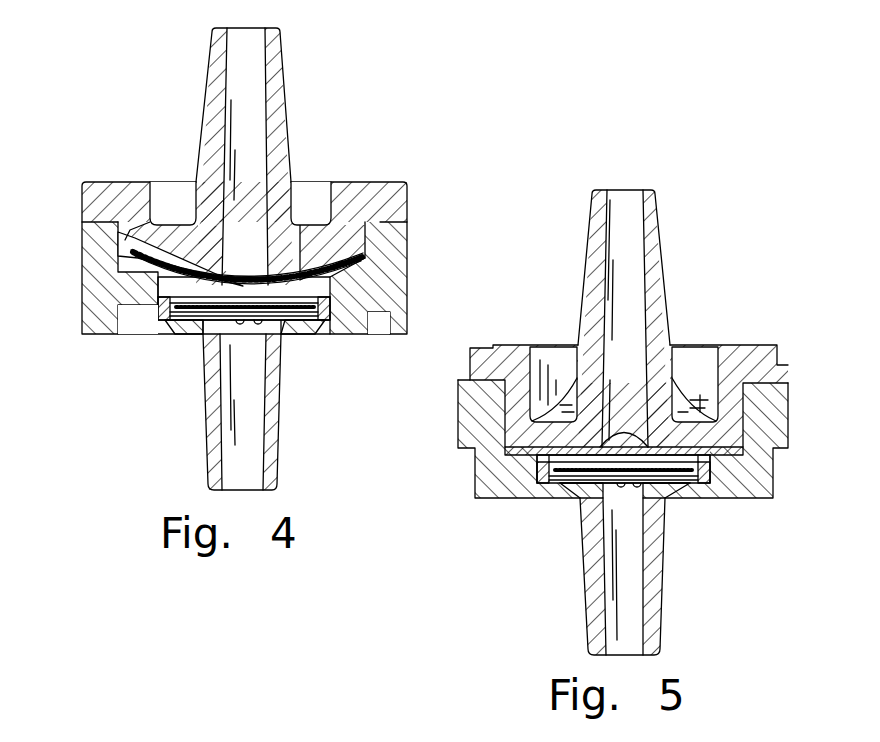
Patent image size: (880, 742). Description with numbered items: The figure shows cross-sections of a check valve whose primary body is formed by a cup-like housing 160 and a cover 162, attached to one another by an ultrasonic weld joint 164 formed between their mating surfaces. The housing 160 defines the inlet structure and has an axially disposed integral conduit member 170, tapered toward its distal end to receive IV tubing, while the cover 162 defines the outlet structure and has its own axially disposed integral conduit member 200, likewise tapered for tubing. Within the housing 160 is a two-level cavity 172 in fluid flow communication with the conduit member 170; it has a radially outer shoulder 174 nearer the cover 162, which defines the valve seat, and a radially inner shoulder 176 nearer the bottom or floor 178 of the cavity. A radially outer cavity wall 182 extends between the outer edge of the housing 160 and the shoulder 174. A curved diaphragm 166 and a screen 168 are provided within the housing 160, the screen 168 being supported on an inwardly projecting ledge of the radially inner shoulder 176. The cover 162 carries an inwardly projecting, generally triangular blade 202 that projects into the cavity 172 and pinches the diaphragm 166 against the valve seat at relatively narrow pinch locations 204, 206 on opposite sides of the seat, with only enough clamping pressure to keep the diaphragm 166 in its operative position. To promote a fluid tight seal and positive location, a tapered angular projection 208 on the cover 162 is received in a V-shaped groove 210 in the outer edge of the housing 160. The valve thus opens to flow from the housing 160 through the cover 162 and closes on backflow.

In FIG. 4, the housing 160 is at (95, 244).
In FIG. 5, the housing 160 is at (790, 386).
In FIG. 4, the cover 162 is at (88, 205).
In FIG. 4, the ultrasonic weld joint 164 is at (400, 220).
In FIG. 4, the diaphragm 166 is at (145, 262).
In FIG. 5, the diaphragm 166 is at (535, 468).
In FIG. 4, the screen 168 is at (185, 328).
In FIG. 5, the screen 168 is at (560, 496).
In FIG. 4, the conduit member 170 is at (272, 447).
In FIG. 5, the conduit member 170 is at (660, 603).
In FIG. 4, the cavity 172 is at (160, 245).
In FIG. 5, the cavity 172 is at (770, 500).
In FIG. 4, the radially outer shoulder 174 is at (165, 298).
In FIG. 5, the radially outer shoulder 174 is at (745, 462).
In FIG. 4, the radially inner shoulder 176 is at (158, 325).
In FIG. 5, the radially inner shoulder 176 is at (715, 500).
In FIG. 4, the bottom or floor 178 is at (202, 322).
In FIG. 5, the bottom or floor 178 is at (585, 498).
In FIG. 4, the radially outer cavity wall 182 is at (325, 212).
In FIG. 4, the conduit member 200 is at (281, 52).
In FIG. 5, the conduit member 200 is at (660, 200).
In FIG. 5, the blade 202 is at (688, 430).
In FIG. 5, the pinch location 204 is at (540, 453).
In FIG. 5, the pinch location 206 is at (775, 456).
In FIG. 4, the tapered angular projection 208 is at (395, 190).
In FIG. 4, the V-shaped groove 210 is at (402, 240).